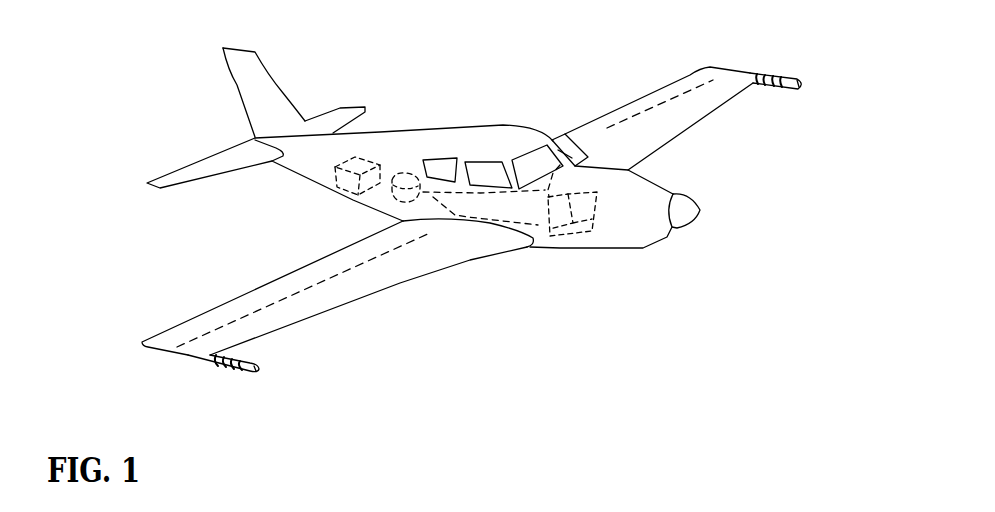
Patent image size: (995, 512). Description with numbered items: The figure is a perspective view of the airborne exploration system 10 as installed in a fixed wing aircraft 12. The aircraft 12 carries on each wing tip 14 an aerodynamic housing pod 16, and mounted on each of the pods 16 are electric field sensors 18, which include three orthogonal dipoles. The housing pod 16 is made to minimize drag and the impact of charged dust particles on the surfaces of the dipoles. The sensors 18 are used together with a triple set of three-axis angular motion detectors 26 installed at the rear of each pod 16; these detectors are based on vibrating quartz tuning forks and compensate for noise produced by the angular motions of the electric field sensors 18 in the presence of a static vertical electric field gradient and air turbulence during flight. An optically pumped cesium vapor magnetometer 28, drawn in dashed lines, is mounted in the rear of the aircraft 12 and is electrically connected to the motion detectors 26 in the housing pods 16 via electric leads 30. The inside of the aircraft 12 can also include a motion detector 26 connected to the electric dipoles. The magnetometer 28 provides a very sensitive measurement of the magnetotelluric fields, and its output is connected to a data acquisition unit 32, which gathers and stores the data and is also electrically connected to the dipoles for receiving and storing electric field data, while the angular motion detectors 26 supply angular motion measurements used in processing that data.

The airborne exploration system 10 is at (502, 234).
The fixed wing aircraft 12 is at (461, 148).
The wing tip 14 is at (719, 86).
The aerodynamic housing pod 16 is at (790, 88).
The electric field sensors 18 is at (797, 68).
The angular motion detectors 26 is at (577, 197).
The optically pumped cesium vapor magnetometer 28 is at (400, 198).
The electric leads 30 is at (600, 140).
The data acquisition unit 32 is at (358, 160).